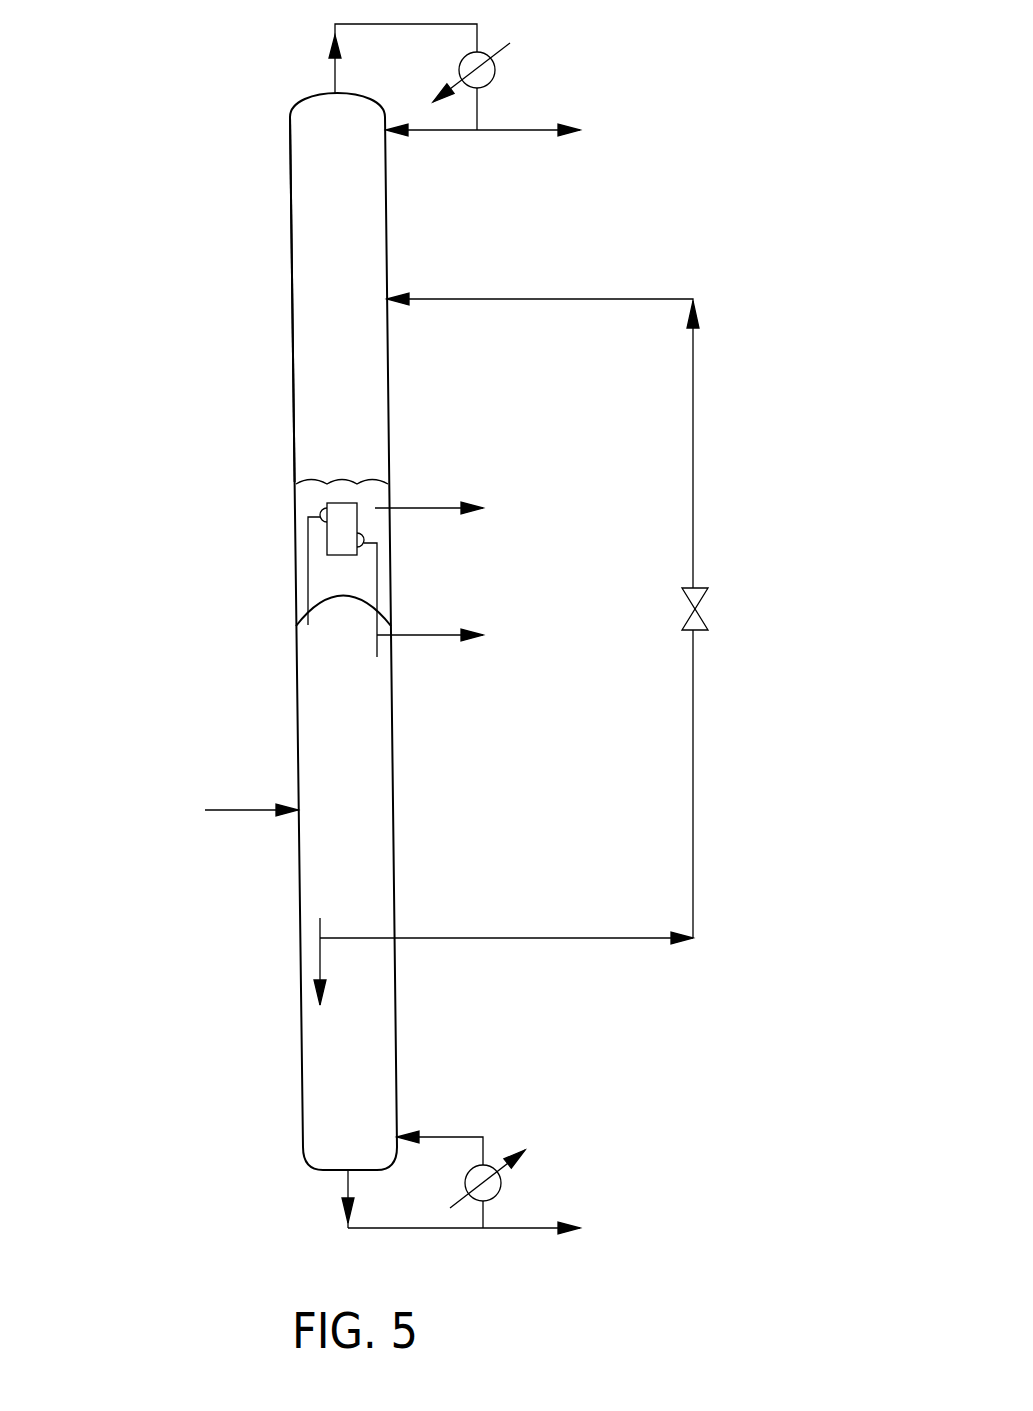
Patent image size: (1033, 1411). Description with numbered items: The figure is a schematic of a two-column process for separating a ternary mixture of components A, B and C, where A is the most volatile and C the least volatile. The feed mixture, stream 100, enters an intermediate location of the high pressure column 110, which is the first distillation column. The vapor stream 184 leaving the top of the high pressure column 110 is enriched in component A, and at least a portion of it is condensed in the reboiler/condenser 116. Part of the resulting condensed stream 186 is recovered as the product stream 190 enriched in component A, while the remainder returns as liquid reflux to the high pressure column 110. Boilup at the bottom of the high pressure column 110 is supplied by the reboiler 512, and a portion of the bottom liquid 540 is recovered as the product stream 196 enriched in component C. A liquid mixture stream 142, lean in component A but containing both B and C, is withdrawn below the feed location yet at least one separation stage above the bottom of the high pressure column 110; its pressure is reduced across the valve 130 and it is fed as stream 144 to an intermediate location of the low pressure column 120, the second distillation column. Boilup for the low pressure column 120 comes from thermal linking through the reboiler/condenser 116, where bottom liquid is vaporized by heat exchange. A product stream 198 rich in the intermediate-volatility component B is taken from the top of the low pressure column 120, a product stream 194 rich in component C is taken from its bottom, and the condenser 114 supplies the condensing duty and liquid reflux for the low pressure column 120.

The feed mixture ABC stream 100 is at (237, 812).
The high pressure column 110 is at (393, 887).
The condenser 114 is at (480, 53).
The reboiler/condenser 116 is at (345, 503).
The low pressure column 120 is at (292, 318).
The valve 130 is at (700, 590).
The liquid mixture stream 142 is at (490, 940).
The reduced-pressure feed stream 144 is at (628, 299).
The vapor stream 184 is at (297, 623).
The condensed stream 186 is at (378, 585).
The product stream enriched in component A 190 is at (426, 637).
The product stream rich in component C 194 is at (426, 507).
The product stream enriched in component C 196 is at (522, 1228).
The product stream rich in component B 198 is at (512, 130).
The reboiler 512 is at (488, 1165).
The bottom liquid 540 is at (347, 1188).